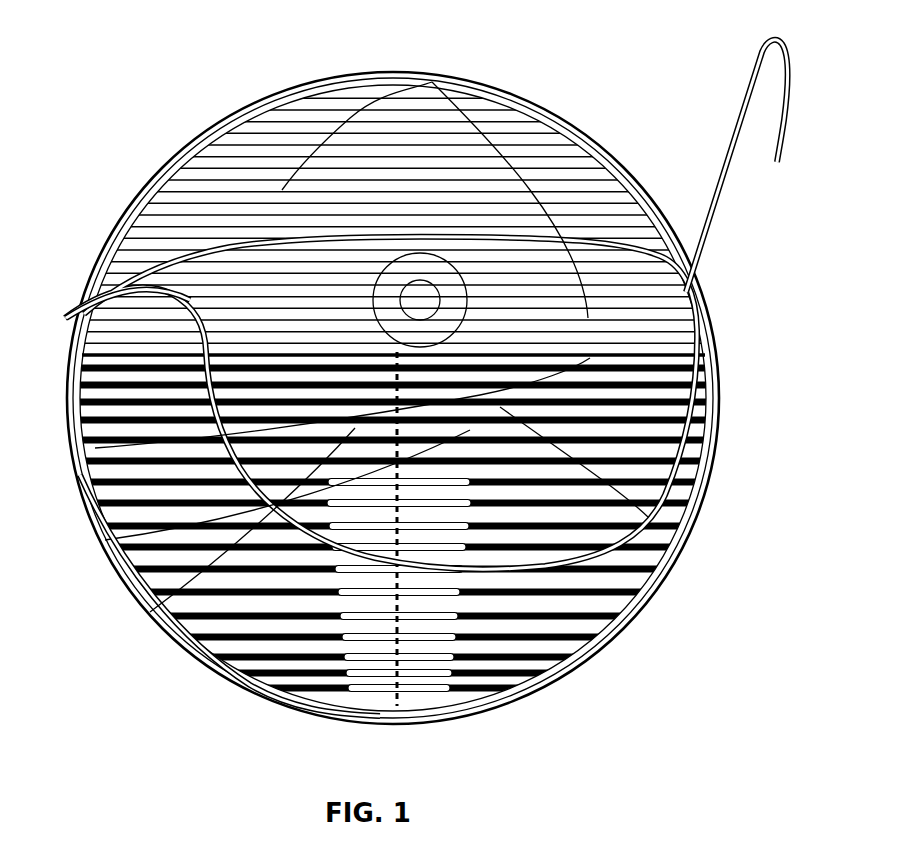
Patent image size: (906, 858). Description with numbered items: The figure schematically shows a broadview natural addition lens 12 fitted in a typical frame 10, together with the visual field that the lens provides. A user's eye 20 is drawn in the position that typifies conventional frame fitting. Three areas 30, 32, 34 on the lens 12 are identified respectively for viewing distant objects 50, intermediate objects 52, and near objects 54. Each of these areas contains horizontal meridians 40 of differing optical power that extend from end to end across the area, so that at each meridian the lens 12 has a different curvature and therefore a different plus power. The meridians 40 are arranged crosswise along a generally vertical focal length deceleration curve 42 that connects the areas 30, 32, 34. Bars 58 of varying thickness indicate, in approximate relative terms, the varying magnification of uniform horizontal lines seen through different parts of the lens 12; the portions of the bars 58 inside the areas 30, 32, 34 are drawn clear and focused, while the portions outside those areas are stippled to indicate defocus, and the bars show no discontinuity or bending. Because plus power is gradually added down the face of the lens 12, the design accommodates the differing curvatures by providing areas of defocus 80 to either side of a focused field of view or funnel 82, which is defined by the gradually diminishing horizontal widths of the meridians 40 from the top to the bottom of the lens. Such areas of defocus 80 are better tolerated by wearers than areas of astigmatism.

The frame 10 is at (719, 332).
The lens 12 is at (432, 82).
The user's eye 20 is at (250, 252).
The area for viewing distant objects 30 is at (700, 425).
The area for viewing intermediate objects 32 is at (592, 362).
The area for viewing near objects 34 is at (377, 507).
The horizontal meridians 40 is at (80, 407).
The focal length deceleration curve 42 is at (357, 430).
The distant objects 50 is at (318, 283).
The intermediate objects 52 is at (648, 517).
The near objects 54 is at (158, 606).
The bars 58 is at (122, 522).
The areas of defocus 80 is at (604, 560).
The focused field of view (funnel) 82 is at (290, 348).